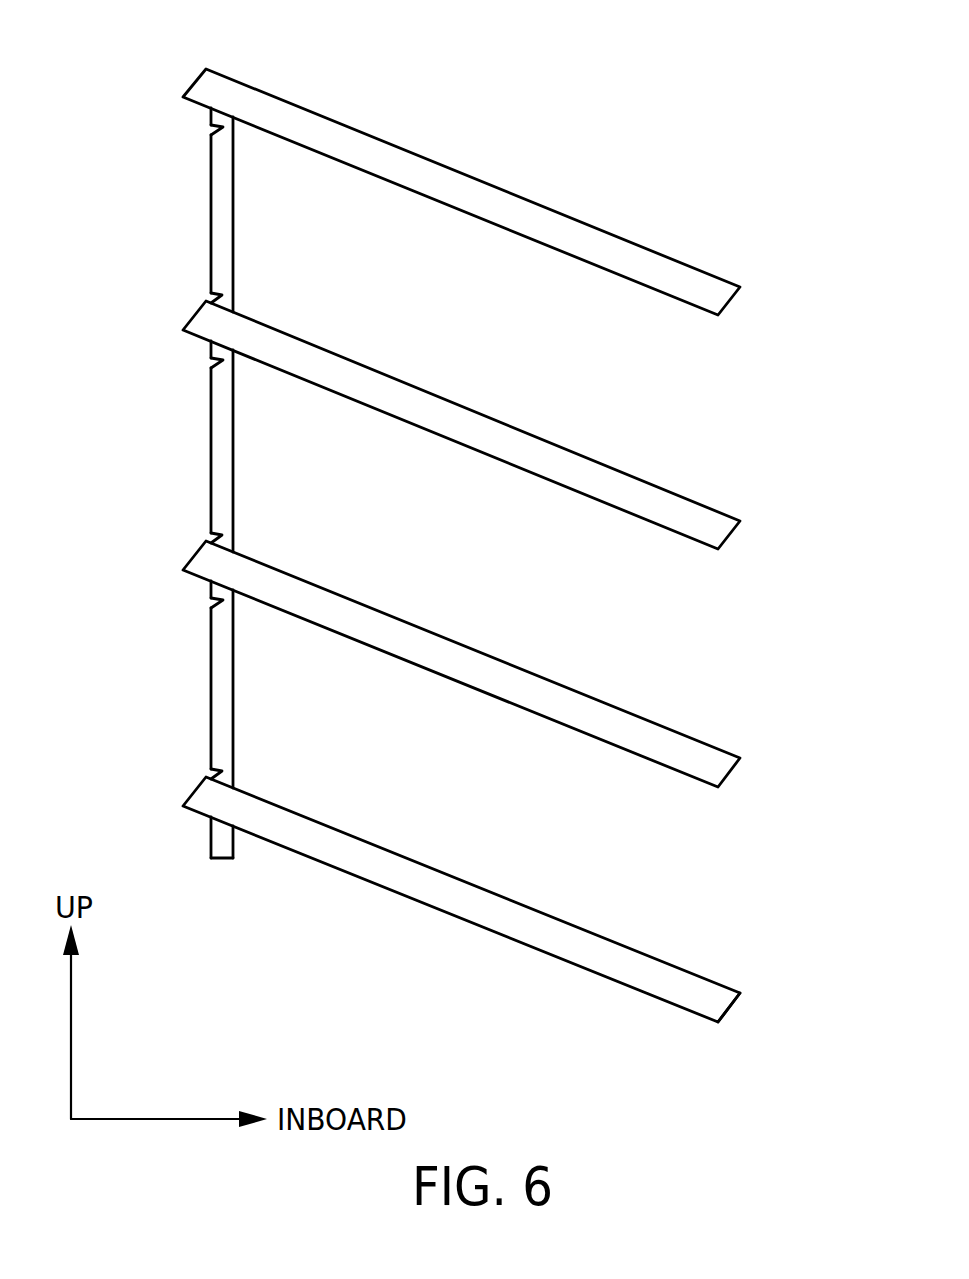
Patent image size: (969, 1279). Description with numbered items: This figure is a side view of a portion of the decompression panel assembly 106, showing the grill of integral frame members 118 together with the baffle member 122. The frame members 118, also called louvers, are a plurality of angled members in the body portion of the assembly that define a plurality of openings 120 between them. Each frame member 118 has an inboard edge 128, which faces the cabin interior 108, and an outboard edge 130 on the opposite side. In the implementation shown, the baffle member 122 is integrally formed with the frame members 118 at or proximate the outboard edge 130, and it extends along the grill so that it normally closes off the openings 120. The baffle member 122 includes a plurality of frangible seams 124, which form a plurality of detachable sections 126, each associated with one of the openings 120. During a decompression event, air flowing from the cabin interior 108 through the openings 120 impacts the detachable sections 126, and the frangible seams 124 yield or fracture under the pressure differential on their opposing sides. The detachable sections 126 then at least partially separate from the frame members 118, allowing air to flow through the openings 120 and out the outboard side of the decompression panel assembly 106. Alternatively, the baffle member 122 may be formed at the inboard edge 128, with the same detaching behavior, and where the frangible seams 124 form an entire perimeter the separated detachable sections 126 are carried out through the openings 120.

The decompression panel assembly 106 is at (640, 76).
The cabin interior 108 is at (890, 546).
The frame members 118 is at (329, 131).
The openings 120 is at (702, 407).
The baffle member 122 is at (202, 483).
The frangible seams 124 is at (208, 129).
The detachable sections 126 is at (210, 192).
The inboard edge 128 is at (730, 1009).
The outboard edge 130 is at (187, 800).